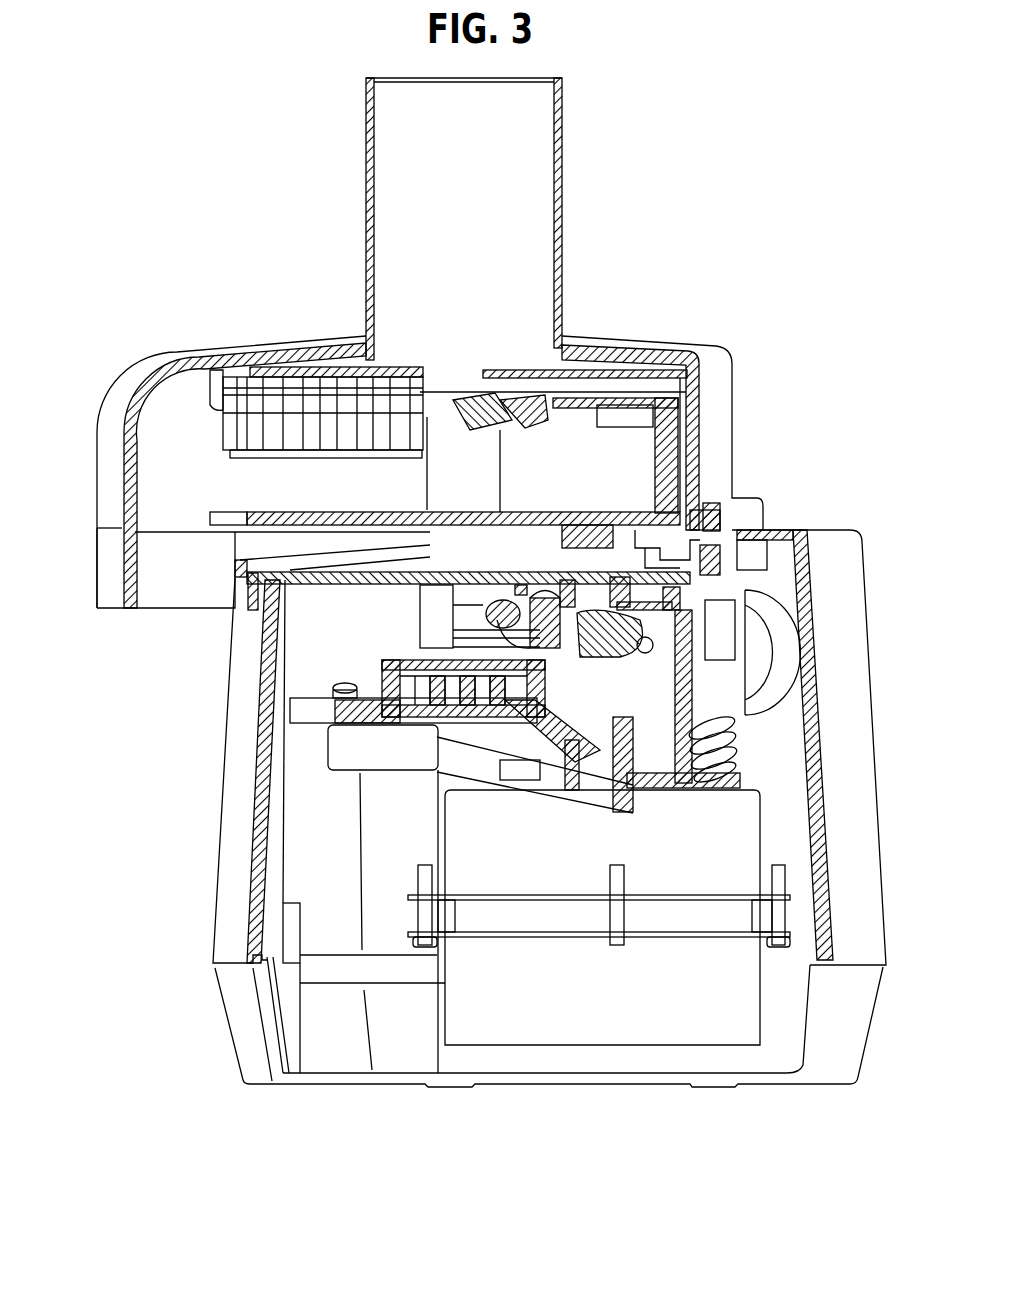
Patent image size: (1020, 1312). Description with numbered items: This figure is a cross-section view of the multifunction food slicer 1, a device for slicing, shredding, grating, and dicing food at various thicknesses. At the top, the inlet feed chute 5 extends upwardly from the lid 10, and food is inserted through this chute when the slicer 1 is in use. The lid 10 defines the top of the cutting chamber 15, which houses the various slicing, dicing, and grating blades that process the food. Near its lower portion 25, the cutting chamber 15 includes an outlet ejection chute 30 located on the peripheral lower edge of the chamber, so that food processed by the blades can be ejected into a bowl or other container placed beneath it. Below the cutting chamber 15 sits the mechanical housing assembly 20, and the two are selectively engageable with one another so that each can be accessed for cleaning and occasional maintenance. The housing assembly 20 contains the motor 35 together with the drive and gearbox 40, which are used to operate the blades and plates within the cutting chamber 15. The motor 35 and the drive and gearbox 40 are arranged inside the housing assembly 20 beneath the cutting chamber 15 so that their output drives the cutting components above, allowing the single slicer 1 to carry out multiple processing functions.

The multifunction food slicer 1 is at (747, 171).
The inlet feed chute 5 is at (566, 138).
The lid 10 is at (632, 330).
The cutting chamber 15 is at (756, 443).
The mechanical housing assembly 20 is at (886, 628).
The lower portion 25 is at (82, 567).
The outlet ejection chute 30 is at (160, 597).
The motor 35 is at (503, 1004).
The drive and gearbox 40 is at (350, 747).